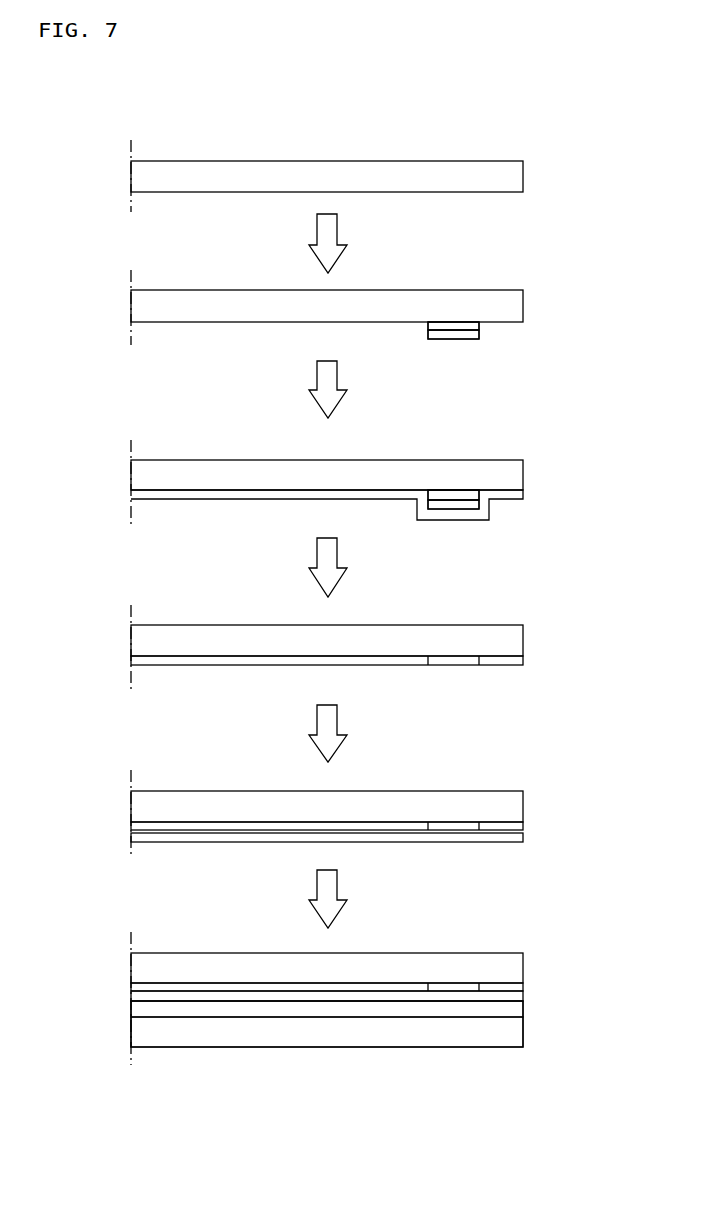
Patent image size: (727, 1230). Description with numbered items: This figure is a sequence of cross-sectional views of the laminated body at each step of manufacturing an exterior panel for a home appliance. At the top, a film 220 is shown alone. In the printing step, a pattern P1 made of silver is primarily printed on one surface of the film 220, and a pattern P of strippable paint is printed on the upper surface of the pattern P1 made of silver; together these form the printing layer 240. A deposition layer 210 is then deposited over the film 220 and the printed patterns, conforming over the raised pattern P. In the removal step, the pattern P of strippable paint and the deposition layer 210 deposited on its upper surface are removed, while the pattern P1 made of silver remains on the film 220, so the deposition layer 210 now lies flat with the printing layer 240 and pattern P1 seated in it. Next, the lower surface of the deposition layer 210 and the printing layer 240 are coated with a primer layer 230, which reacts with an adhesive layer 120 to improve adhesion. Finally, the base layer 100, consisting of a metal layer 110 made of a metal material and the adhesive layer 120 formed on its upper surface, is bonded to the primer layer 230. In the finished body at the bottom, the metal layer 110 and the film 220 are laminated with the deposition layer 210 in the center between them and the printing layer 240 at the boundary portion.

The film 220 is at (523, 176).
The deposition layer 210 is at (523, 497).
The primer layer 230 is at (523, 838).
The printing layer 240 is at (440, 330).
The pattern made of silver P1 is at (453, 630).
The pattern of the strippable paint P is at (466, 337).
The adhesive layer 120 is at (523, 1010).
The metal layer 110 is at (523, 1032).
The base layer 100 is at (586, 1010).